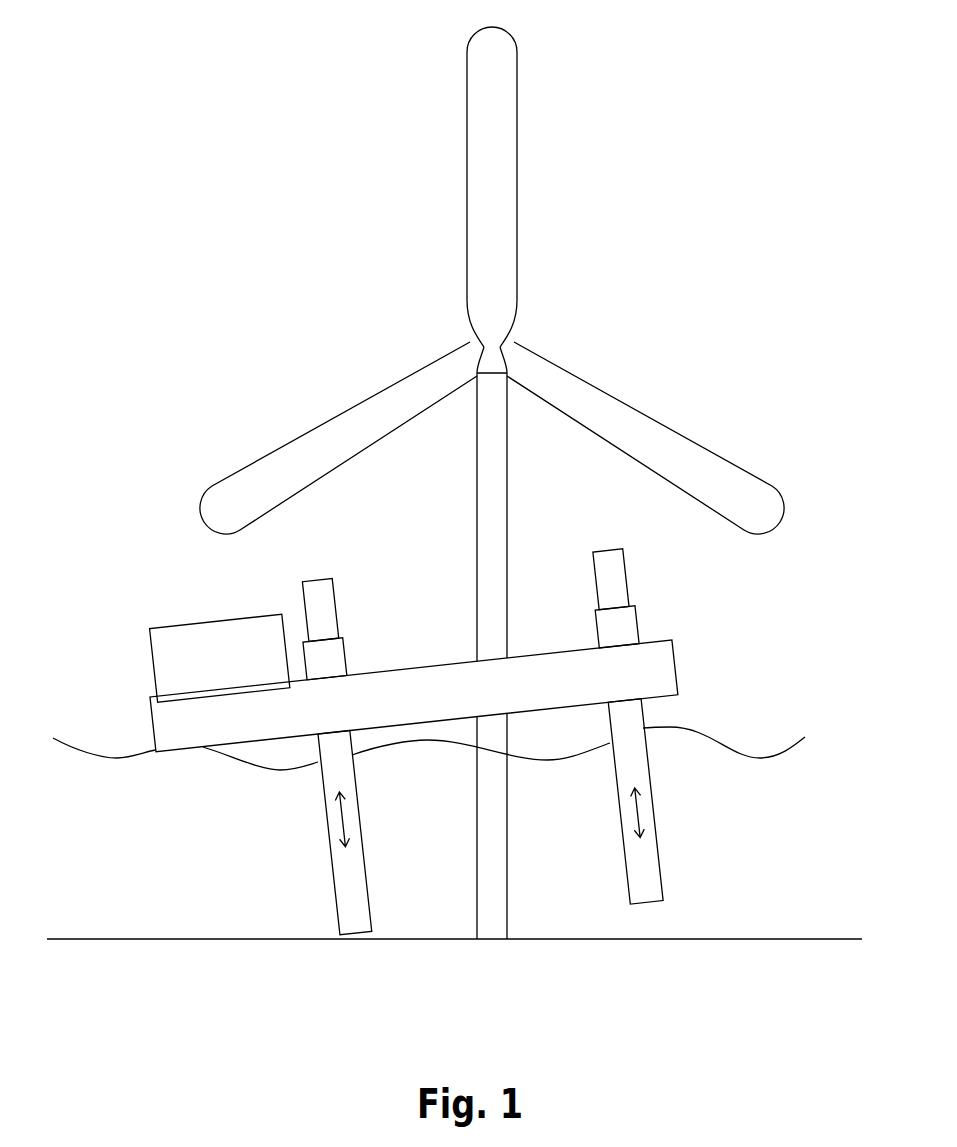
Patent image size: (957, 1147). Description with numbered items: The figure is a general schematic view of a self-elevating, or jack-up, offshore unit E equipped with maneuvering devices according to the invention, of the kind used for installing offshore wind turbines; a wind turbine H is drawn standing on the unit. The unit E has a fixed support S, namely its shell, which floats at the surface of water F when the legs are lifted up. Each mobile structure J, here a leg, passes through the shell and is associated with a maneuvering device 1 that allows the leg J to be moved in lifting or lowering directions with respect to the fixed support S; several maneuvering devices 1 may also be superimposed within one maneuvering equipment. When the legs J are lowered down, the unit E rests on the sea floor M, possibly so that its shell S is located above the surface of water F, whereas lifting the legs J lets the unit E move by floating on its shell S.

The wind turbine rotor H is at (482, 180).
The mobile unit E is at (461, 710).
The fixed support S is at (408, 690).
The mobile structure J is at (315, 597).
The maneuvering device 1 is at (347, 628).
The surface of water F is at (762, 758).
The sea floor M is at (172, 940).